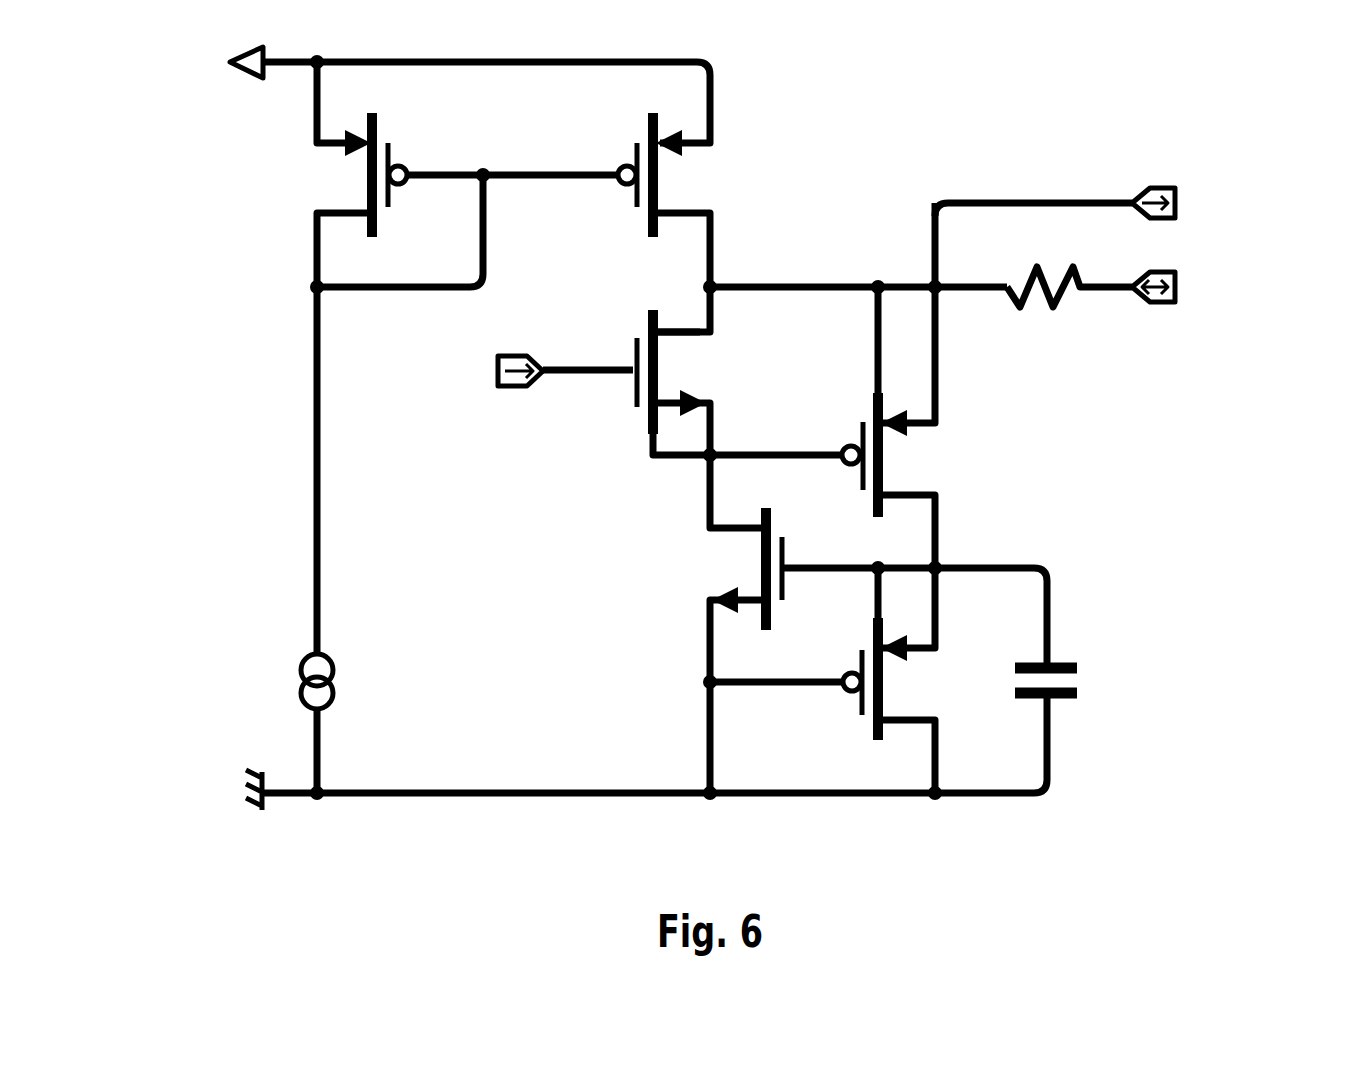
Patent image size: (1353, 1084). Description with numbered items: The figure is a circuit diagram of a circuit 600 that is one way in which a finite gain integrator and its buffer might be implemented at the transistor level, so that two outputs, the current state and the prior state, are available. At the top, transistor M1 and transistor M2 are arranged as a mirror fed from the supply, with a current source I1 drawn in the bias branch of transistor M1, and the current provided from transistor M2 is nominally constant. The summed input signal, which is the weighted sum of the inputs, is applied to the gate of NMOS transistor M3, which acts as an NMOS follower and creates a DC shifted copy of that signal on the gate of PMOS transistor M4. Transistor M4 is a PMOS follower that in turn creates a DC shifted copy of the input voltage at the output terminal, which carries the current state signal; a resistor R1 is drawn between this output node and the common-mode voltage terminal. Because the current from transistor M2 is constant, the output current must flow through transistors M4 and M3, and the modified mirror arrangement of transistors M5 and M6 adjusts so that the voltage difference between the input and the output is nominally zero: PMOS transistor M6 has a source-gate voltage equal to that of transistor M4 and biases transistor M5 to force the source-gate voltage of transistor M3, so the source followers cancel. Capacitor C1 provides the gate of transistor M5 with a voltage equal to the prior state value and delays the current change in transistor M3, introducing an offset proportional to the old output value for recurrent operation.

The circuit 600 is at (702, 429).
The transistor M1 is at (391, 175).
The transistor M2 is at (633, 175).
The NMOS transistor M3 is at (624, 372).
The PMOS transistor M4 is at (858, 455).
The transistor M5 is at (772, 569).
The PMOS transistor M6 is at (857, 679).
The resistor R1 is at (1069, 275).
The capacitor C1 is at (1058, 656).
The current source I1 is at (329, 664).